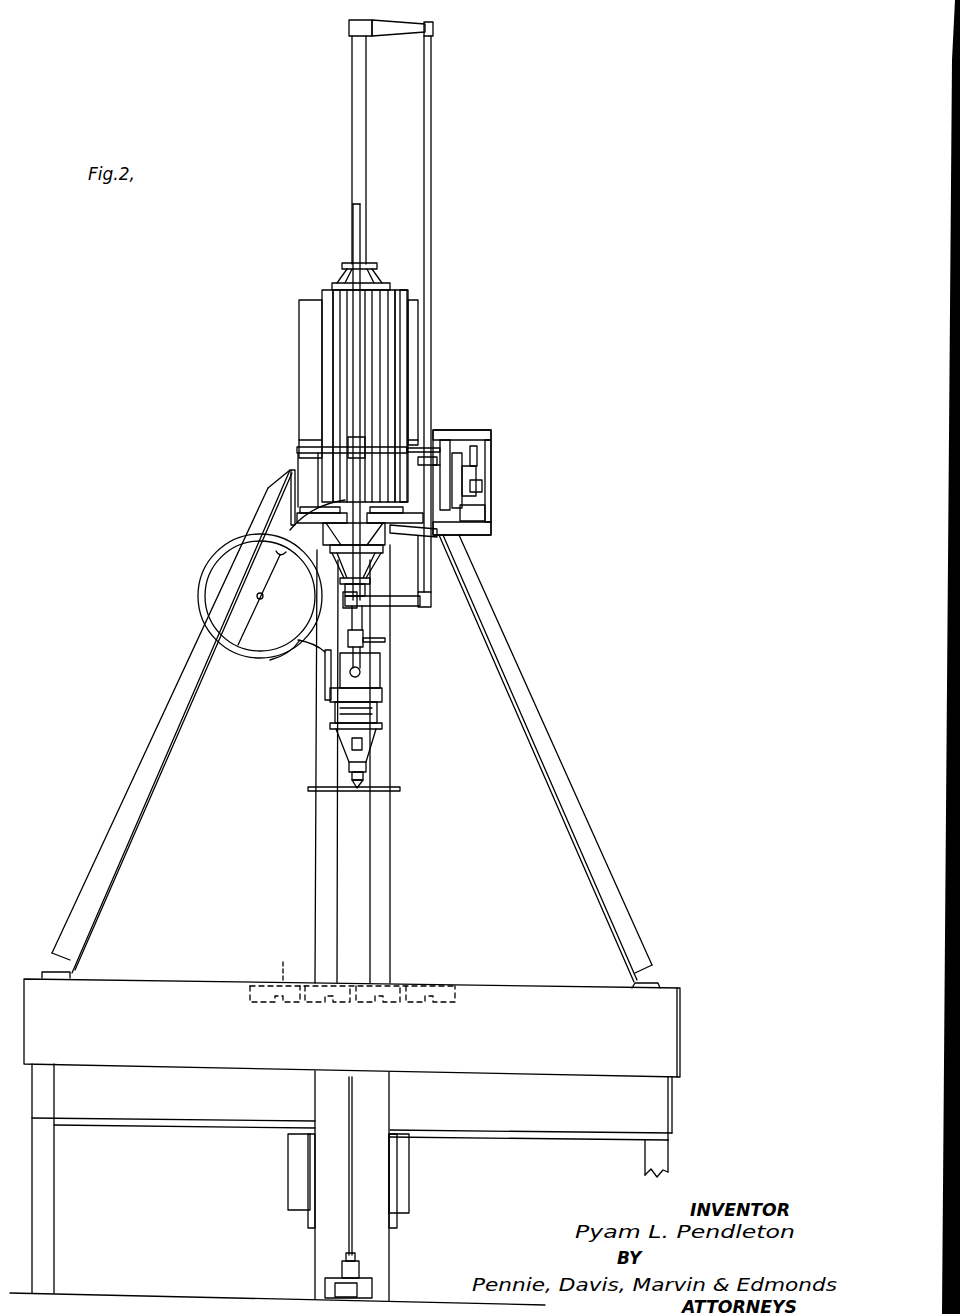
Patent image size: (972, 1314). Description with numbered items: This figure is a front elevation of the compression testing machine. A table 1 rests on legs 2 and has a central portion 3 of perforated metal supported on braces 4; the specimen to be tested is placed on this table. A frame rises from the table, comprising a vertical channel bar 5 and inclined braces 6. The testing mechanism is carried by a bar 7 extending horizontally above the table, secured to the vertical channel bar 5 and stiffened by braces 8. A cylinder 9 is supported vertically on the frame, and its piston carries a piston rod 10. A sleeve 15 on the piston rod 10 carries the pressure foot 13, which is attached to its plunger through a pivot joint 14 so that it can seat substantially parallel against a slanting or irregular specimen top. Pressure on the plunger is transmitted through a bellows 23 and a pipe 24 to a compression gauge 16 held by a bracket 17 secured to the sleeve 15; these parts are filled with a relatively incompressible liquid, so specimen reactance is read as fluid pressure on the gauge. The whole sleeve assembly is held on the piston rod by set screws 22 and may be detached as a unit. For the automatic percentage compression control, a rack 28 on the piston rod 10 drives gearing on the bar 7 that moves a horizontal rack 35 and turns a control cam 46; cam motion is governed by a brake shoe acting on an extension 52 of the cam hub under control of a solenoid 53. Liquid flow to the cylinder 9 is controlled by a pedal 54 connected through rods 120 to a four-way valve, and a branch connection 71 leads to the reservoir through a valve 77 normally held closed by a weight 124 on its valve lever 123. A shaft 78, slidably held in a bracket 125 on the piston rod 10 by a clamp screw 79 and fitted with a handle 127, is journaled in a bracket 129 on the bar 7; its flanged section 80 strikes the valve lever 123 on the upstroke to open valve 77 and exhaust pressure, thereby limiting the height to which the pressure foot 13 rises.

The table 1 is at (480, 982).
The legs 2 is at (48, 1197).
The central portion 3 is at (276, 958).
The braces 4 is at (385, 1008).
The vertical channel bar 5 is at (391, 882).
The inclined braces 6 is at (135, 780).
The bar 7 is at (410, 440).
The braces 8 is at (446, 345).
The cylinder 9 is at (333, 312).
The piston rod 10 is at (351, 146).
The pressure foot 13 is at (308, 789).
The pivot joint 14 is at (362, 786).
The sleeve 15 is at (366, 658).
The compression gauge 16 is at (199, 592).
The bracket 17 is at (320, 655).
The set screws 22 is at (361, 675).
The bellows 23 is at (336, 724).
The pipe 24 is at (330, 693).
The rack 28 is at (431, 175).
The horizontal rack 35 is at (455, 520).
The control cam 46 is at (458, 445).
The extension 52 is at (476, 490).
The solenoid 53 is at (472, 509).
The pedal 54 is at (357, 1290).
The branch connection 71 is at (432, 560).
The valve 77 is at (266, 496).
The shaft 78 is at (357, 333).
The clamp screw 79 is at (370, 608).
The flanged section 80 is at (340, 498).
The rods 120 is at (346, 1234).
The valve lever 123 is at (372, 523).
The weight 124 is at (370, 580).
The bracket 125 is at (290, 652).
The handle 127 is at (386, 640).
The bracket 129 is at (352, 435).